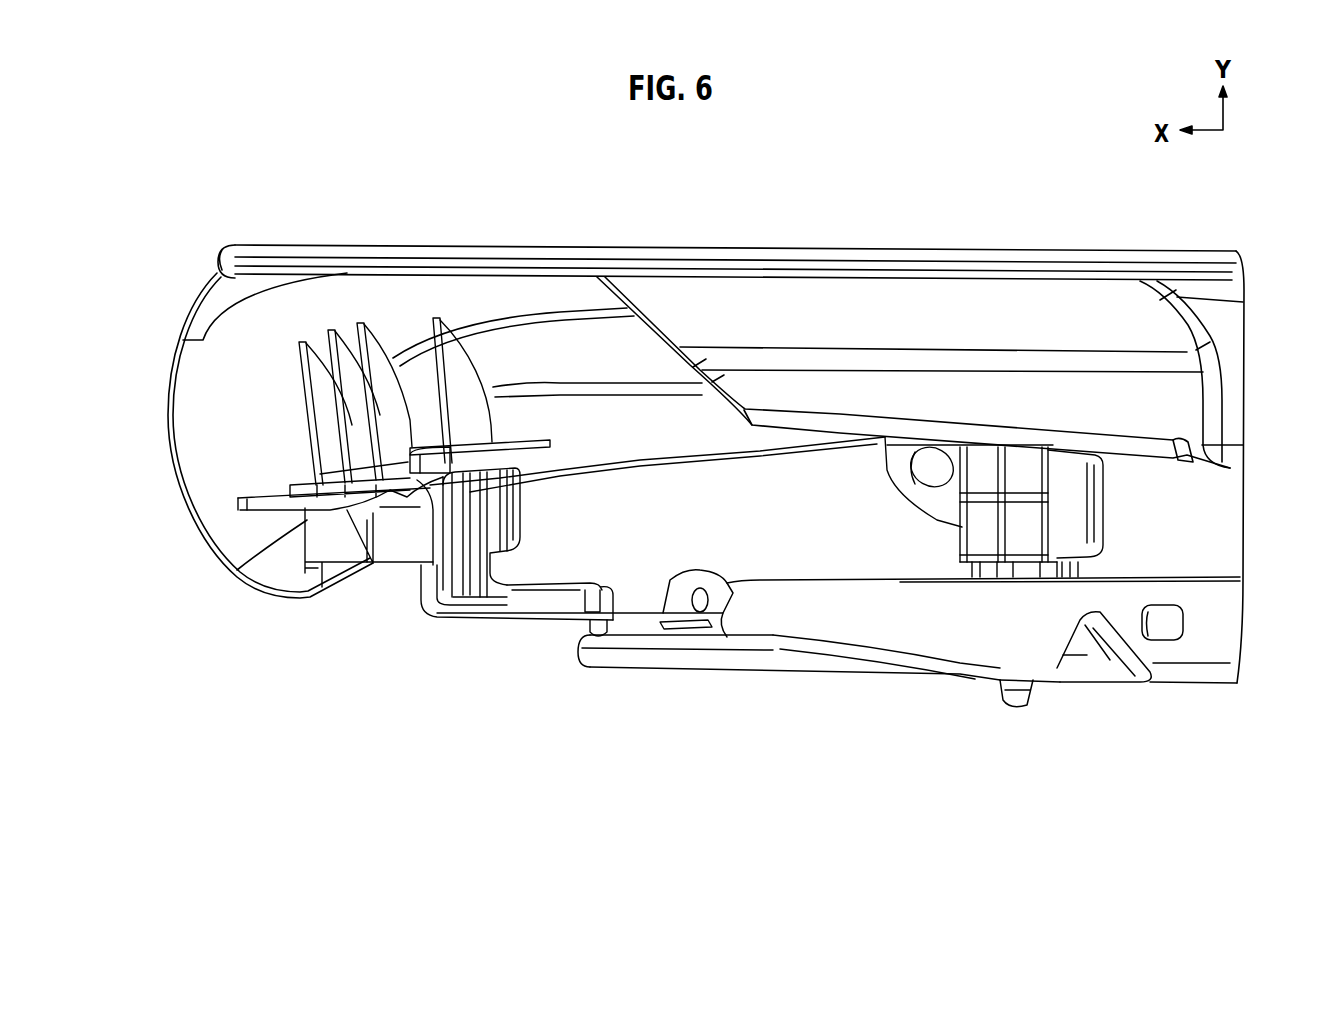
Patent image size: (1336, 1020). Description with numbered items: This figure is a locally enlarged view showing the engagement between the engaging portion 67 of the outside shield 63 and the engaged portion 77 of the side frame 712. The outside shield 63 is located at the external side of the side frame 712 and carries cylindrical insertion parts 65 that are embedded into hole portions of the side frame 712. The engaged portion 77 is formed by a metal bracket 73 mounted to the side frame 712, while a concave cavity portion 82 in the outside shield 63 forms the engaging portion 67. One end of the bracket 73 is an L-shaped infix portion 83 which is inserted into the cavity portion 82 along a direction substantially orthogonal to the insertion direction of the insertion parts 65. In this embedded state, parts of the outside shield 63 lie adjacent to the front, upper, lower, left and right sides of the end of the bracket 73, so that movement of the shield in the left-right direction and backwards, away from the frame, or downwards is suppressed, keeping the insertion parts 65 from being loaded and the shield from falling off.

The outside shield 63 is at (828, 250).
The insertion part 65 is at (1077, 515).
The engaging portion 67 is at (420, 445).
The bracket 73 is at (497, 623).
The engaged portion 77 is at (423, 490).
The concave cavity portion 82 is at (388, 505).
The infix portion 83 is at (368, 515).
The side frame 712 is at (778, 660).